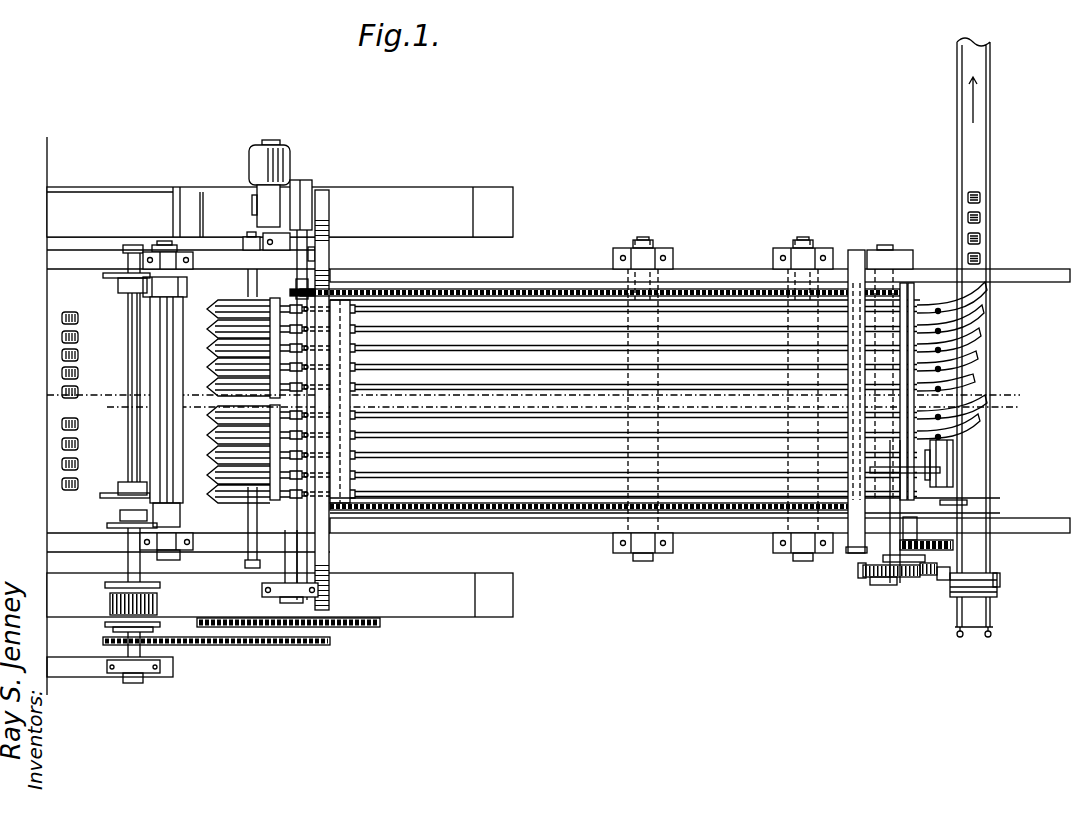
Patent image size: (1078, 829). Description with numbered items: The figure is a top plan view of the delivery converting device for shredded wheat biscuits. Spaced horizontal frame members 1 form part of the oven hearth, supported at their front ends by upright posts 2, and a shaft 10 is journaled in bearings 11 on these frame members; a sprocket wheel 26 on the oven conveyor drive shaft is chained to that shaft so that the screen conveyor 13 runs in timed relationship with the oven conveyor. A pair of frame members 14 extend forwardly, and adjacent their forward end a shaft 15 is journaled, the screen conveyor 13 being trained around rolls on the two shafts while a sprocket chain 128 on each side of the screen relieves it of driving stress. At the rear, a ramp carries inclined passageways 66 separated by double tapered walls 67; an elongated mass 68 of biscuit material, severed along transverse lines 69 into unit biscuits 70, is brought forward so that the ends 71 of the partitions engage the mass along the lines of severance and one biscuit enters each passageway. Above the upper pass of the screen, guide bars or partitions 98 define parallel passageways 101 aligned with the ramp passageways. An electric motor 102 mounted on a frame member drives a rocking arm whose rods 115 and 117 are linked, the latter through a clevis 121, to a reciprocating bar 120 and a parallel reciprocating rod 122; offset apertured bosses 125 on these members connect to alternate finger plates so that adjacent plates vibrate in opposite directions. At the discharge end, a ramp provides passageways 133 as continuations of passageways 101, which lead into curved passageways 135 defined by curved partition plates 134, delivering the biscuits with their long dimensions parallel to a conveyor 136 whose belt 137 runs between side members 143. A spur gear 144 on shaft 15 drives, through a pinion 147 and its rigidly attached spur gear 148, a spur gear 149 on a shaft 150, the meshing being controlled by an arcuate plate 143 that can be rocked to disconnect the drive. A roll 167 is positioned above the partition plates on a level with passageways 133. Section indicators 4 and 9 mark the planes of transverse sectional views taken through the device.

The frame members 1 is at (397, 202).
The upright posts 2 is at (500, 193).
The vertical support column 4 is at (109, 334).
The direction arrow 9 is at (861, 447).
The shaft 10 is at (287, 562).
The bearings 11 is at (278, 242).
The screen conveyor 13 is at (535, 303).
The frame members 14 is at (463, 252).
The shaft 15 is at (886, 247).
The sprocket wheel 26 is at (355, 633).
The inclined passageways 66 is at (228, 318).
The double tapered walls 67 is at (214, 308).
The elongated mass 68 is at (52, 302).
The lines of severance 69 is at (60, 338).
The unit shredded wheat biscuits 70 is at (70, 310).
The ends 71 is at (215, 435).
The guide bars or partitions 98 is at (552, 356).
The parallel passageways 101 is at (688, 318).
The electric motor 102 is at (258, 162).
The rod 115 is at (322, 266).
The rod 117 is at (296, 282).
The reciprocating bar 120 is at (340, 293).
The clevis 121 is at (323, 273).
The reciprocating rod 122 is at (222, 341).
The offset apertured bosses 125 is at (315, 345).
The sprocket chain 128 is at (478, 292).
The passageways 133 is at (915, 310).
The curved partition plates 134 is at (977, 325).
The curved passageways 135 is at (973, 357).
The conveyor 136 is at (978, 183).
The conveyor belt 137 is at (978, 155).
The side members 143 is at (957, 201).
The spur gear 144 is at (867, 572).
The pinion 147 is at (925, 583).
The spur gear 148 is at (883, 571).
The spur gear 149 is at (945, 582).
The shaft 150 is at (947, 538).
The roll 167 is at (960, 473).